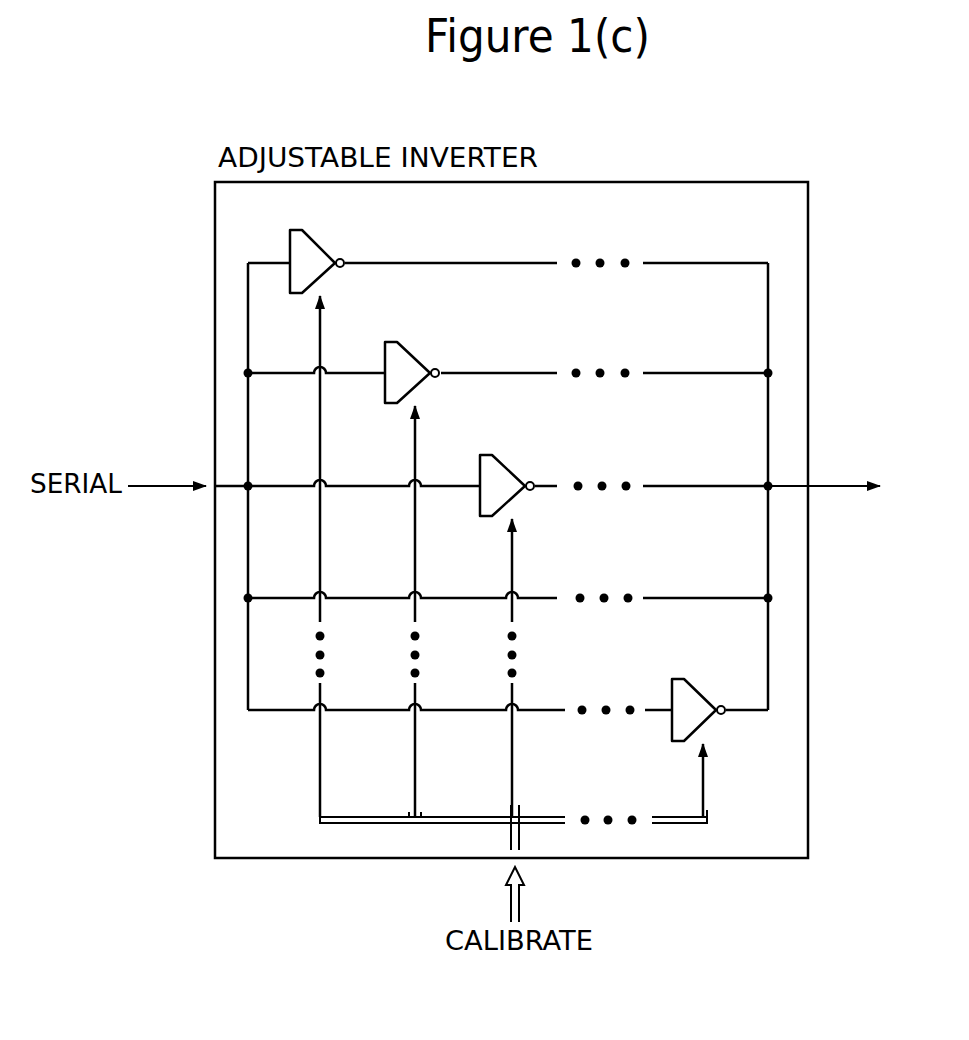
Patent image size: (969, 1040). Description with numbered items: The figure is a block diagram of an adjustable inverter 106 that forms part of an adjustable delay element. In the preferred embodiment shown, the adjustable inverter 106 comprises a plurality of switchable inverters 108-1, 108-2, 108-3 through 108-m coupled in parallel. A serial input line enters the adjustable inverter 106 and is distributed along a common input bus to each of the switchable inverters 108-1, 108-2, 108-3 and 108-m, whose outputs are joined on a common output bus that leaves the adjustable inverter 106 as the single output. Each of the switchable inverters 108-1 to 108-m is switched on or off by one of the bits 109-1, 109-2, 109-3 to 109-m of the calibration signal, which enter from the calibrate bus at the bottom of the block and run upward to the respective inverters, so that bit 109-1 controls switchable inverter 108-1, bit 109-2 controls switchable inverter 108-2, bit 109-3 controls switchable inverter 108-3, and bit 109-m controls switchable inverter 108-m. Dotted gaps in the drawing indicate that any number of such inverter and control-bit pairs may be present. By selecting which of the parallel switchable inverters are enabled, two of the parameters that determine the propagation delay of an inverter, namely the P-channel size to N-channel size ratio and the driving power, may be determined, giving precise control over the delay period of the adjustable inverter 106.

The adjustable inverter 106 is at (511, 500).
The switchable inverter 108-1 is at (332, 249).
The switchable inverter 108-2 is at (429, 360).
The switchable inverter 108-3 is at (523, 472).
The switchable inverter 108-m is at (717, 696).
The bit of the calibration signal 109-1 is at (356, 556).
The bit of the calibration signal 109-2 is at (453, 611).
The bit of the calibration signal 109-3 is at (550, 668).
The bit of the calibration signal 109-m is at (741, 780).